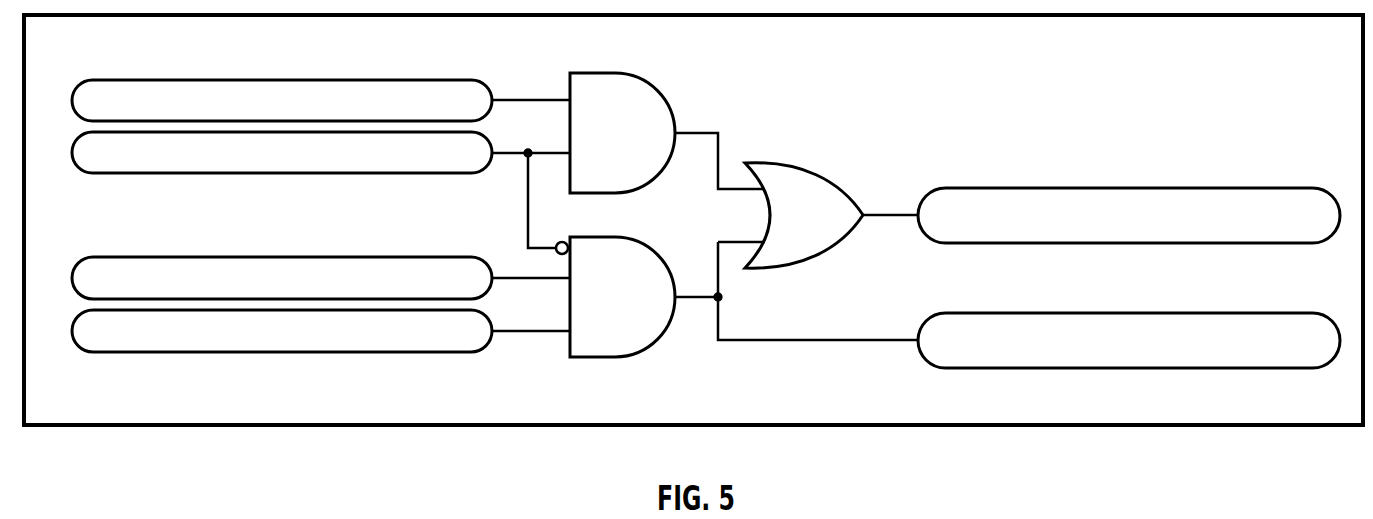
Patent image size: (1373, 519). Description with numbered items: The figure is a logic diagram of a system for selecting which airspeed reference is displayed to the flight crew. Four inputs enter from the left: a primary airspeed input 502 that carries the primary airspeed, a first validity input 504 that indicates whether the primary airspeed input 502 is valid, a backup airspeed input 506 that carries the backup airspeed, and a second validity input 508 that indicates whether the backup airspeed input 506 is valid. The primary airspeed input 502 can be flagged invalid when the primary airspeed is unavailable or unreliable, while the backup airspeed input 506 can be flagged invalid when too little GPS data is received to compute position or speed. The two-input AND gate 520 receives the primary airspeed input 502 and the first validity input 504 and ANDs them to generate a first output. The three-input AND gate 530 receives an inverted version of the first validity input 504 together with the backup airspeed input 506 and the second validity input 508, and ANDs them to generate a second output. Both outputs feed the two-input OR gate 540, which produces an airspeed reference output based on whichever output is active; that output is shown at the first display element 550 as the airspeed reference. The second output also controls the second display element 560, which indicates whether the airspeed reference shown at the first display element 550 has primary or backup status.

The primary airspeed input 502 is at (115, 79).
The first validity input 504 is at (115, 174).
The backup airspeed input 506 is at (115, 256).
The second validity input 508 is at (115, 353).
The two-input AND gate 520 is at (597, 72).
The three-input AND gate 530 is at (597, 358).
The two-input OR gate 540 is at (815, 170).
The first display element 550 is at (1130, 187).
The second display element 560 is at (1145, 369).